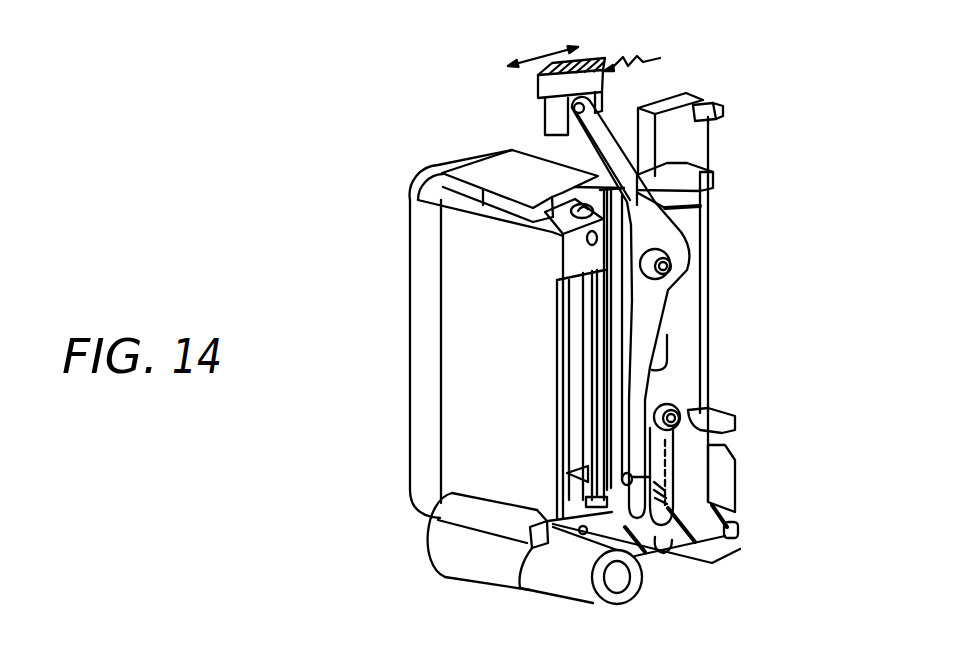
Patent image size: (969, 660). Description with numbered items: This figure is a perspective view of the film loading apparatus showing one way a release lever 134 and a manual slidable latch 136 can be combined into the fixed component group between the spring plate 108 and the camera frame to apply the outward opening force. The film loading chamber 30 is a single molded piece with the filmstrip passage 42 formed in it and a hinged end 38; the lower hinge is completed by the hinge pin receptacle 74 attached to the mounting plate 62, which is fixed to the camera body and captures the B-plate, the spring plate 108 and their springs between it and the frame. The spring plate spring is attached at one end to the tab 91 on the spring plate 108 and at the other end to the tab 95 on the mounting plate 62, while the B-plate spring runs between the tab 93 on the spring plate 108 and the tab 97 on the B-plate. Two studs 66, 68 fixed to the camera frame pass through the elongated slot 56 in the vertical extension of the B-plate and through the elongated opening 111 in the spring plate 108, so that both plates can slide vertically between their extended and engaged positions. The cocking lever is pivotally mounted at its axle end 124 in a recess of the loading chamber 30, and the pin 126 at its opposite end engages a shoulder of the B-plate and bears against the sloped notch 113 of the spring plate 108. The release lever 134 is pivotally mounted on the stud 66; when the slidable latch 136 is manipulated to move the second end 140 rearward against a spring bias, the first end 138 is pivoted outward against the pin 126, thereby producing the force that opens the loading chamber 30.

The film loading chamber 30 is at (438, 162).
The manual slidable latch 136 is at (594, 58).
The second end 140 is at (593, 117).
The mounting plate 62 is at (668, 105).
The tab 95 is at (722, 110).
The tab 97 is at (720, 177).
The spring plate 108 is at (680, 377).
The axle end 124 is at (548, 228).
The release lever 134 is at (663, 308).
The stud 66 is at (684, 254).
The filmstrip passage 42 is at (575, 312).
The first end 138 is at (643, 397).
The sloped notch 113 is at (600, 462).
The stud 68 is at (681, 408).
The tab 91 is at (735, 424).
The pin 126 is at (683, 467).
The tab 93 is at (736, 532).
The elongated slot 56 is at (682, 530).
The elongated opening 111 is at (663, 550).
The hinged end 38 is at (445, 548).
The hinge pin receptacle 74 is at (585, 600).